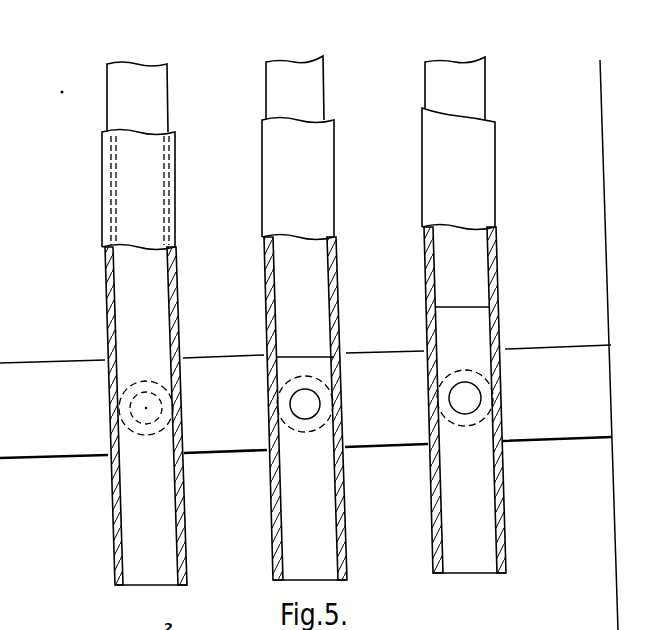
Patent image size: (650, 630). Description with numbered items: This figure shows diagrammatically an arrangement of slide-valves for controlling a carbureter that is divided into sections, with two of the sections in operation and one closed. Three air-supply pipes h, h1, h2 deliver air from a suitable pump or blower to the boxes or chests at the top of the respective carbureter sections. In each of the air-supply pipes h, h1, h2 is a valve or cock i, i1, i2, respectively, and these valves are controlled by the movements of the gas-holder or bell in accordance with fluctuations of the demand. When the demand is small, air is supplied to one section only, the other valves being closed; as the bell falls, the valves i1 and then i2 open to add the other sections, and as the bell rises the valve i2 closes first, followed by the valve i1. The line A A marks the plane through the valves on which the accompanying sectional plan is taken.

The section line A is at (309, 345).
The valve or cock i is at (477, 285).
The valve or cock i1 is at (315, 318).
The valve or cock i2 is at (155, 312).
The air-supply pipe h is at (472, 402).
The air-supply pipe h1 is at (315, 407).
The air-supply pipe h2 is at (152, 414).